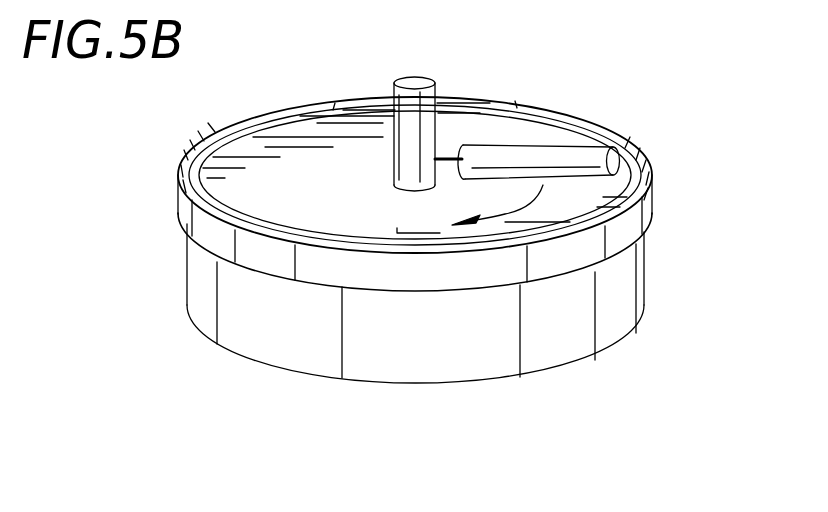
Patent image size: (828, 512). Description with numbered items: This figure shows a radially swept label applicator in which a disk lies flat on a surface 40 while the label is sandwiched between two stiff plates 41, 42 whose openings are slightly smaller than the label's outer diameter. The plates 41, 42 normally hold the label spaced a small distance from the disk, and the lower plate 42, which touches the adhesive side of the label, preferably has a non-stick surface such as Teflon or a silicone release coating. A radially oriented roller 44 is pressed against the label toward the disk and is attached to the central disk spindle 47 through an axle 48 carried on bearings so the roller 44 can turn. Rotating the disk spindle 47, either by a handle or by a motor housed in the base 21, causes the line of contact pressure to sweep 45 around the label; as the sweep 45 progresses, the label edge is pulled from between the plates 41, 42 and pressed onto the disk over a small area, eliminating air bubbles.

The base 21 is at (645, 268).
The surface 40 is at (368, 229).
The stiff plate 41 is at (204, 140).
The stiff plate 42 is at (250, 135).
The radially oriented roller 44 is at (537, 152).
The sweeping motion 45 is at (515, 212).
The disk spindle 47 is at (408, 122).
The axle 48 is at (448, 150).